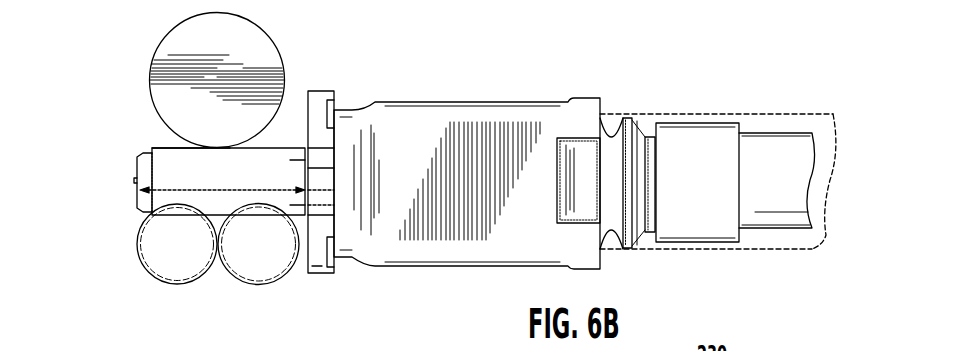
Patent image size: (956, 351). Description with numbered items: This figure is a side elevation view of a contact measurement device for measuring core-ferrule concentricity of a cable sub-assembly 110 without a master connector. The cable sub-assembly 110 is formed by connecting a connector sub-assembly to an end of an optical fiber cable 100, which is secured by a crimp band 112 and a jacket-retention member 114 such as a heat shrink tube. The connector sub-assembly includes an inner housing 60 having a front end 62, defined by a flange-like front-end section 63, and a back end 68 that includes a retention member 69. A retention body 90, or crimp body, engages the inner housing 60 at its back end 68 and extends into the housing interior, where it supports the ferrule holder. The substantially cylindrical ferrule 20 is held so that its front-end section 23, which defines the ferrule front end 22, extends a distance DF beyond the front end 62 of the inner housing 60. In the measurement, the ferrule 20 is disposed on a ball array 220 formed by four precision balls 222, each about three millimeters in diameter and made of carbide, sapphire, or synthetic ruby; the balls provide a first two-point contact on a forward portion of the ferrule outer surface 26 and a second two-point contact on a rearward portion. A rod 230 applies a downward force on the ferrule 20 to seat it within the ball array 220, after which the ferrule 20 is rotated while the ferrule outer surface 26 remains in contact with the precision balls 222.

The ferrule 20 is at (133, 130).
The front end 22 is at (137, 167).
The front-end section 23 is at (296, 91).
The ferrule outer surface 26 is at (163, 147).
The inner housing 60 is at (452, 102).
The front end 62 is at (306, 273).
The front-end section 63 is at (357, 90).
The back end 68 is at (603, 107).
The retention member 69 is at (578, 183).
The retention body 90 is at (646, 232).
The optical fiber cable 100 is at (777, 203).
The cable sub-assembly 110 is at (522, 72).
The crimp band 112 is at (705, 137).
The jacket-retention member 114 is at (770, 114).
The ball array 220 is at (141, 281).
The precision ball 222 is at (230, 274).
The rod 230 is at (262, 48).